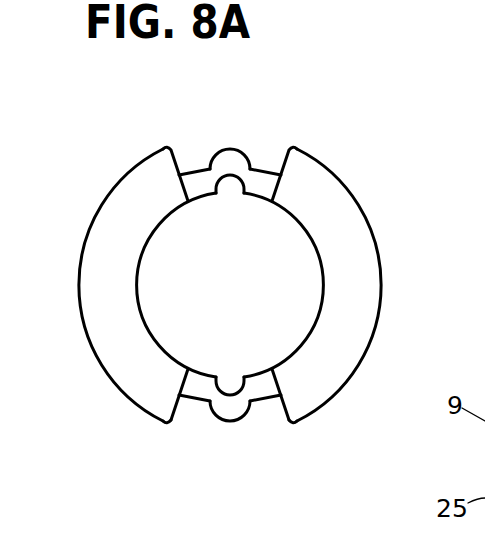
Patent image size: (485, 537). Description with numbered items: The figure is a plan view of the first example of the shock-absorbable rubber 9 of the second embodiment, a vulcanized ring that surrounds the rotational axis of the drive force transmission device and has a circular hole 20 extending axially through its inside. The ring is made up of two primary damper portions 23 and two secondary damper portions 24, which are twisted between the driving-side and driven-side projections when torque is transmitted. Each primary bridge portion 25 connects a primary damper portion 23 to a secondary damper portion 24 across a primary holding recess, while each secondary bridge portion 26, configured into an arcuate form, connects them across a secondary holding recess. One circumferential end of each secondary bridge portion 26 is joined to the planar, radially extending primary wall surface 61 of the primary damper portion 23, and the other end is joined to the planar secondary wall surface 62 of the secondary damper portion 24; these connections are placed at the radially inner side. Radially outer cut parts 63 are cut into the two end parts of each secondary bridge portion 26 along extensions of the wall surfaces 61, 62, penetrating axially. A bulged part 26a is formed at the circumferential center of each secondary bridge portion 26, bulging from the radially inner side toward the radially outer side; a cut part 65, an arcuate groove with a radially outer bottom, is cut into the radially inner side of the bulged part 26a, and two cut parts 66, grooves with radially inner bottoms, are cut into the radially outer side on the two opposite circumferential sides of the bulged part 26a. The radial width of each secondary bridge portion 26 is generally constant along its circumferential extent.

The shock-absorbable rubber 9 is at (90, 178).
The circular hole 20 is at (288, 235).
The primary damper portion 23 is at (148, 152).
The secondary damper portion 24 is at (318, 157).
The primary bridge portion 25 is at (80, 275).
The secondary bridge portion 26 is at (226, 150).
The bulged part 26a is at (236, 158).
The primary wall surface 61 is at (281, 414).
The secondary wall surface 62 is at (181, 418).
The radially outer cut part 63 is at (197, 403).
The cut part (arcuate groove) 65 is at (231, 178).
The cut part 66 is at (197, 168).